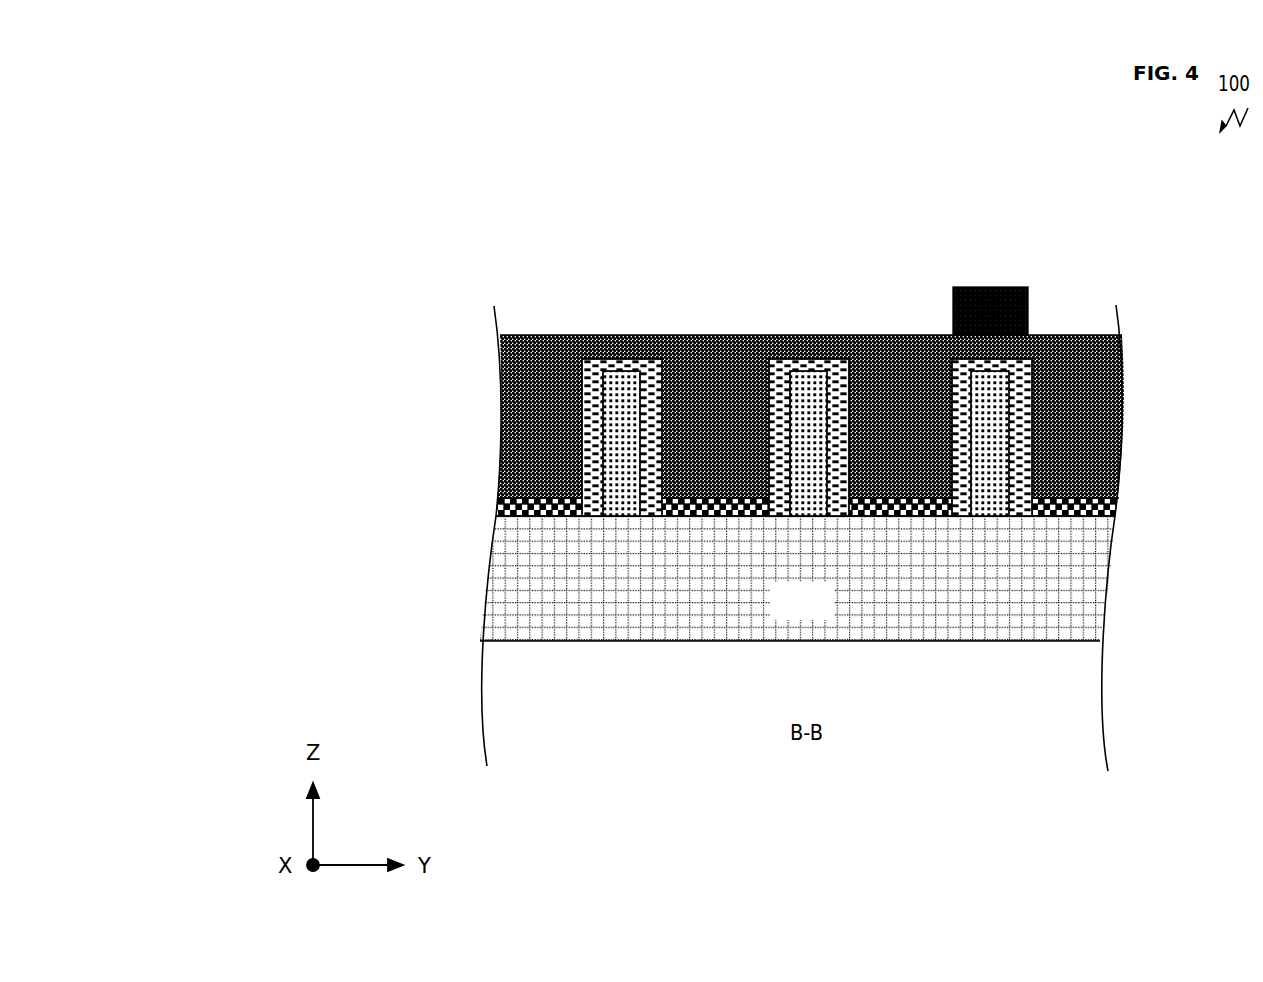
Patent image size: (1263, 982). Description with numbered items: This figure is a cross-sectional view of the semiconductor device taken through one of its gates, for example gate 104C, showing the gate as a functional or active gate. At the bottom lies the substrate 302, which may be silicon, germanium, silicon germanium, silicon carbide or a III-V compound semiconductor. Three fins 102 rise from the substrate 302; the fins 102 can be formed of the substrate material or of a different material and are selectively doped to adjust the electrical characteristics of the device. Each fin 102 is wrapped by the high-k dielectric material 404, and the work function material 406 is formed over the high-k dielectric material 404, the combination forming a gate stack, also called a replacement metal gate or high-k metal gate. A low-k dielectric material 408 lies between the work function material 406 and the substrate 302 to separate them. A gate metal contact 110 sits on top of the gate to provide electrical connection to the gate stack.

The gate 104C is at (675, 220).
The fin 102 is at (613, 383).
The high-k dielectric material 404 is at (795, 358).
The gate metal contact 110 is at (947, 292).
The work function material 406 is at (1073, 335).
The low-k dielectric material 408 is at (503, 499).
The substrate 302 is at (810, 604).